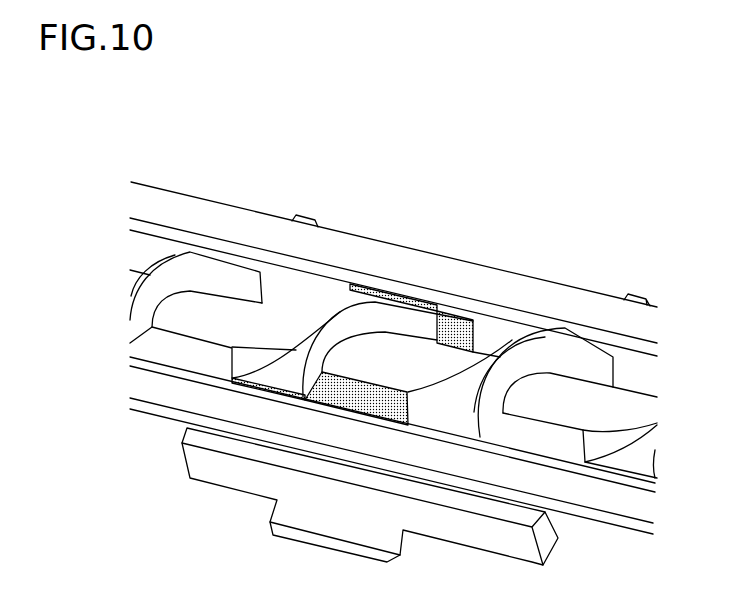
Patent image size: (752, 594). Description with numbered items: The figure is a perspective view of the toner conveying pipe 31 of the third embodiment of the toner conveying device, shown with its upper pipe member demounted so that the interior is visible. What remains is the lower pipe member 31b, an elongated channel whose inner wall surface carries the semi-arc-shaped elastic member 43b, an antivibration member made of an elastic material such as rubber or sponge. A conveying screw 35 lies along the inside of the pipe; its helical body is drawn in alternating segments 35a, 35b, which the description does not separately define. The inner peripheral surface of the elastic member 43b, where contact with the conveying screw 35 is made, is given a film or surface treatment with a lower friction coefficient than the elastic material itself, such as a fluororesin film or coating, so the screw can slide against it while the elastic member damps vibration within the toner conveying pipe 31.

The toner conveying pipe 31 is at (528, 185).
The lower pipe member 31b is at (547, 288).
The conveying screw 35 is at (333, 142).
The first blade segment 35a is at (208, 272).
The second blade segment 35b is at (252, 315).
The elastic member 43b is at (451, 330).